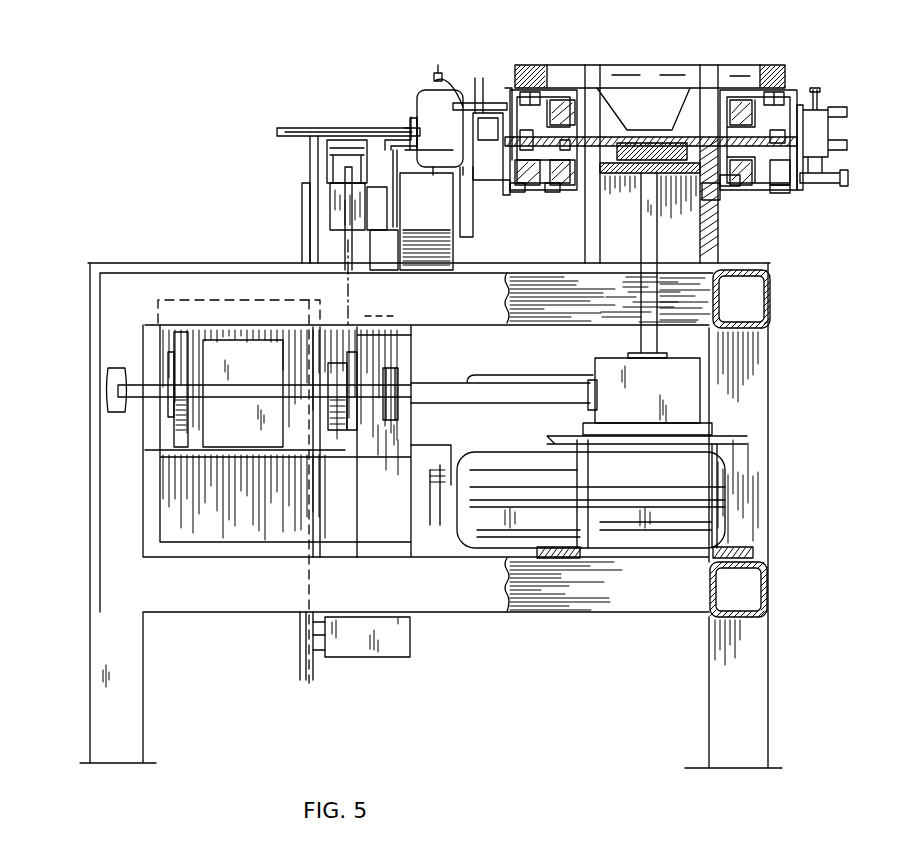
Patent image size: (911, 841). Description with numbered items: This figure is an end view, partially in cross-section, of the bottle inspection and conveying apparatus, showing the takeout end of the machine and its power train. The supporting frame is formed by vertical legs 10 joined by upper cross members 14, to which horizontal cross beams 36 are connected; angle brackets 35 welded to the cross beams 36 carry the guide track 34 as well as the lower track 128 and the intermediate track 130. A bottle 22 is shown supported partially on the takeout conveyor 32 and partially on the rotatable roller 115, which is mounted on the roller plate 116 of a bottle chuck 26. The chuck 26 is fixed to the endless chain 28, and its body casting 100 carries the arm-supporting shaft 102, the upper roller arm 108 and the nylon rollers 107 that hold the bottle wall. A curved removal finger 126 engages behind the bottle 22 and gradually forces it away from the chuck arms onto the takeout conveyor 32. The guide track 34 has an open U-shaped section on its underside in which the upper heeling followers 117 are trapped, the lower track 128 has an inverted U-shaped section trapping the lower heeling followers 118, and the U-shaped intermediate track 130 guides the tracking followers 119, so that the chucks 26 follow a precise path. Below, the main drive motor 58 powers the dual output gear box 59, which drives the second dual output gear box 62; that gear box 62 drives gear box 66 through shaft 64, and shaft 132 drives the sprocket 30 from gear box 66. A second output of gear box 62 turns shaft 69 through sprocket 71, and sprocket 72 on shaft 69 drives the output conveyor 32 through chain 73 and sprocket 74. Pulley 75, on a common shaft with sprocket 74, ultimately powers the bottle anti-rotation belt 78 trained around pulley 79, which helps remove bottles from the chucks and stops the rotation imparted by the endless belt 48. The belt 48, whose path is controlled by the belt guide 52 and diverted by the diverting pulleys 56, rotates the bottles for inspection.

The vertical legs 10 is at (145, 720).
The upper cross members 14 is at (770, 290).
The glass bottles 22 is at (425, 93).
The bottle chucks 26 is at (842, 94).
The endless chain 28 is at (528, 141).
The sprocket 30 is at (722, 180).
The output conveyor 32 is at (455, 255).
The guide track 34 is at (567, 66).
The angle brackets 35 is at (612, 112).
The horizontal cross beams 36 is at (632, 308).
The endless belt 48 is at (313, 680).
The belt guide 52 is at (412, 122).
The diverting pulleys 56 is at (293, 653).
The main drive motor 58 is at (727, 405).
The dual output gear box 59 is at (320, 530).
The second dual output gear box 62 is at (232, 340).
The shaft 64 is at (440, 382).
The gear box 66 is at (700, 367).
The shaft 69 is at (168, 357).
The sprocket 71 is at (140, 383).
The sprocket 72 is at (337, 363).
The chain 73 is at (380, 316).
The sprocket 74 is at (345, 175).
The pulley 75 is at (302, 190).
The bottle anti-rotation belt 78 is at (280, 128).
The pulley 79 is at (313, 128).
The body casting 100 is at (543, 197).
The arm-supporting shaft 102 is at (510, 88).
The nylon rollers 107 is at (444, 78).
The upper roller arm 108 is at (478, 102).
The rotatable roller 115 is at (470, 188).
The roller plate 116 is at (506, 196).
The upper heeling followers 117 is at (538, 70).
The lower heeling followers 118 is at (540, 183).
The tracking followers 119 is at (735, 137).
The curved removal finger 126 is at (423, 111).
The lower track 128 is at (740, 180).
The intermediate track 130 is at (612, 121).
The shaft 132 is at (655, 255).